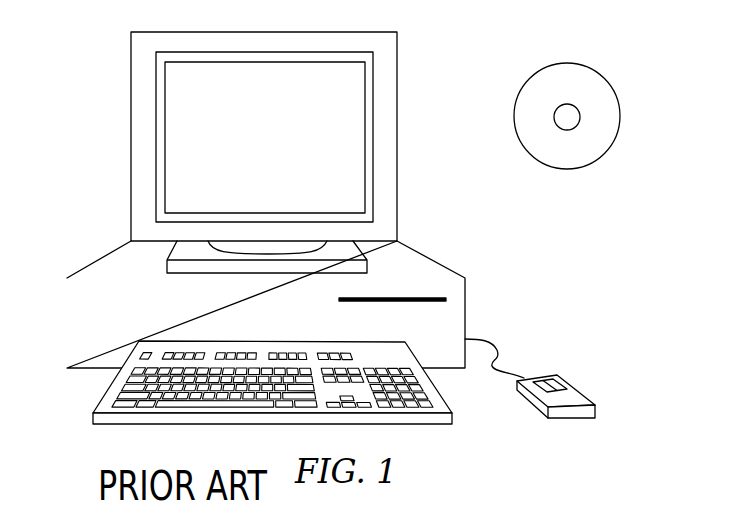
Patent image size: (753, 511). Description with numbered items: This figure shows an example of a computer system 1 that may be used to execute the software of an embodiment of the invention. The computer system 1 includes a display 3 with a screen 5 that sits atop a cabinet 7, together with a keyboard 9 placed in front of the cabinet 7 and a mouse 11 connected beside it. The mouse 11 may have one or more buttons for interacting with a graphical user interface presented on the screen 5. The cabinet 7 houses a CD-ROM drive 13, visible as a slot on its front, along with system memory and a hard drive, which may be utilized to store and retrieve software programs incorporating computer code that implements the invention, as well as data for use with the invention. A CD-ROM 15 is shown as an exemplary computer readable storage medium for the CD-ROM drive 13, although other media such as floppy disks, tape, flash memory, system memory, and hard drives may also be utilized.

The computer system 1 is at (467, 50).
The display 3 is at (237, 152).
The screen 5 is at (175, 98).
The cabinet 7 is at (268, 304).
The keyboard 9 is at (131, 423).
The mouse 11 is at (567, 383).
The CD-ROM drive 13 is at (446, 300).
The CD-ROM 15 is at (605, 75).